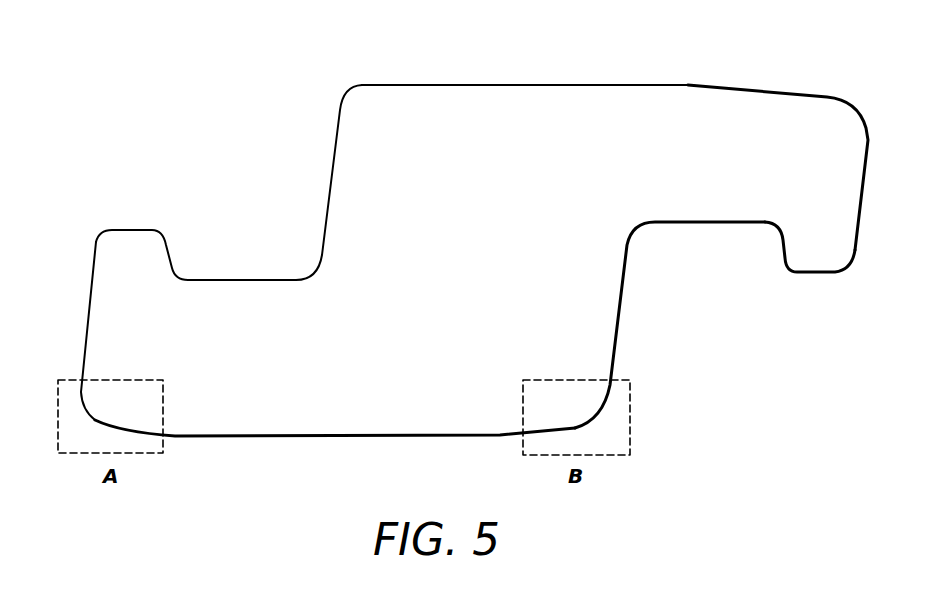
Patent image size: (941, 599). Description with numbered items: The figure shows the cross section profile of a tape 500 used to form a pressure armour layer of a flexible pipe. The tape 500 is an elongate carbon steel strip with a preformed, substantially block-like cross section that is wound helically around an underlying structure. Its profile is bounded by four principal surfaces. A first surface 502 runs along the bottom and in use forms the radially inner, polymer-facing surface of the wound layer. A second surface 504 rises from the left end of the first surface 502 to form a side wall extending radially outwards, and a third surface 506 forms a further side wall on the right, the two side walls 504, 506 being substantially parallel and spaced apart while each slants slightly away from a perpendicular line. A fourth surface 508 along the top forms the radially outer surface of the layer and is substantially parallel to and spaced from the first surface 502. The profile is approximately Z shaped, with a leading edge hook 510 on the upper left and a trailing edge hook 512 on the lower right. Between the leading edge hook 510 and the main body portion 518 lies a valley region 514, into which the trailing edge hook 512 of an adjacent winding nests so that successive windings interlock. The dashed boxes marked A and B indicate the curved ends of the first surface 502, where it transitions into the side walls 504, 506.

The tape 500 is at (200, 143).
The first surface 502 is at (468, 439).
The second surface 504 is at (89, 318).
The third surface 506 is at (622, 313).
The fourth surface 508 is at (612, 84).
The leading edge hook 510 is at (134, 241).
The trailing edge hook 512 is at (817, 260).
The valley region 514 is at (241, 280).
The main body portion 518 is at (479, 97).